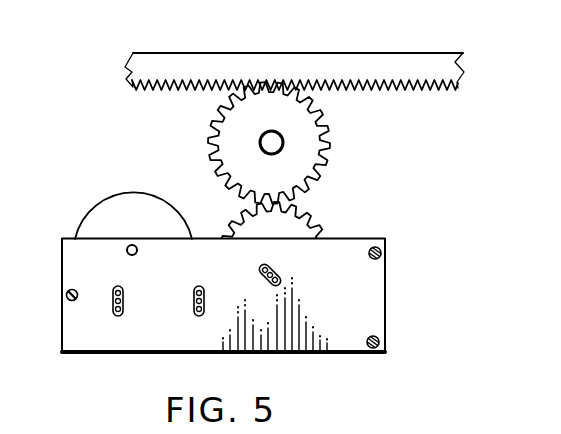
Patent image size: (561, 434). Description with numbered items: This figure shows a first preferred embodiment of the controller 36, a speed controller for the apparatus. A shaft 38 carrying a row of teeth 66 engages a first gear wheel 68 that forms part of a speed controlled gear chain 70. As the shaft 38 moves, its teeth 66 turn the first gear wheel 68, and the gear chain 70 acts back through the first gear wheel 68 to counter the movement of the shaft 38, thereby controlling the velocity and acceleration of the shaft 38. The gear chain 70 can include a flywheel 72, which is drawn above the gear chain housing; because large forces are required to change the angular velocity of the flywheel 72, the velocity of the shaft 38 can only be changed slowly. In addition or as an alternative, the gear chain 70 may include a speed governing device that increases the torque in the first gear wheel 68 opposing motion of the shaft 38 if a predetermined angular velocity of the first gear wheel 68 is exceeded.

The controller 36 is at (314, 198).
The shaft 38 is at (294, 75).
The teeth 66 is at (424, 92).
The first gear wheel 68 is at (228, 127).
The speed controlled gear chain 70 is at (373, 310).
The flywheel 72 is at (108, 213).